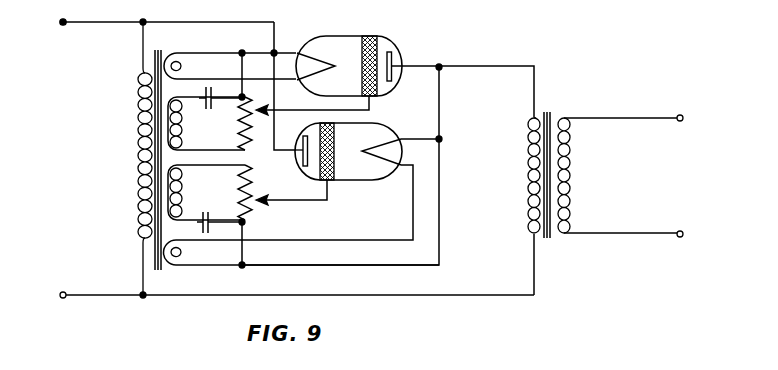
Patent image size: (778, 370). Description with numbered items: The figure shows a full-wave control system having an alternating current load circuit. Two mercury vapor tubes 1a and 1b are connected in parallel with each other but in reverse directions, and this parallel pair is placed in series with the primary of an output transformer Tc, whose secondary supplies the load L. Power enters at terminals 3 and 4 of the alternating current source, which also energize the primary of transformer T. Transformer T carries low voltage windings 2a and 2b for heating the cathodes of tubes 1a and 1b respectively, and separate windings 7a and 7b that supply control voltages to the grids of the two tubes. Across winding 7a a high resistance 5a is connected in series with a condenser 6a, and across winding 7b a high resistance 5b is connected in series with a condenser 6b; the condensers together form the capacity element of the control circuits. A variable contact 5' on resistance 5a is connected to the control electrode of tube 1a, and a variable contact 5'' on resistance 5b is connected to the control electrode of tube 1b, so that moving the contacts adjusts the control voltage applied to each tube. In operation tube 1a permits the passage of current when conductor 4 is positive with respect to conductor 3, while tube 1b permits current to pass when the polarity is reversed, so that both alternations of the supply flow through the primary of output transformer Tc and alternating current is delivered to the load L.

The terminal 3 is at (93, 23).
The terminal 4 is at (92, 296).
The transformer T is at (136, 158).
The winding 2a is at (230, 64).
The condenser 6a is at (210, 98).
The winding 7a is at (206, 123).
The resistance 5a is at (239, 127).
The variable contact 5' is at (311, 102).
The winding 7b is at (206, 192).
The resistance 5b is at (239, 198).
The variable contact 5'' is at (291, 192).
The condenser 6b is at (210, 238).
The winding 2b is at (302, 257).
The tube 1a is at (396, 42).
The tube 1b is at (392, 128).
The output transformer Tc is at (548, 120).
The load L is at (623, 176).